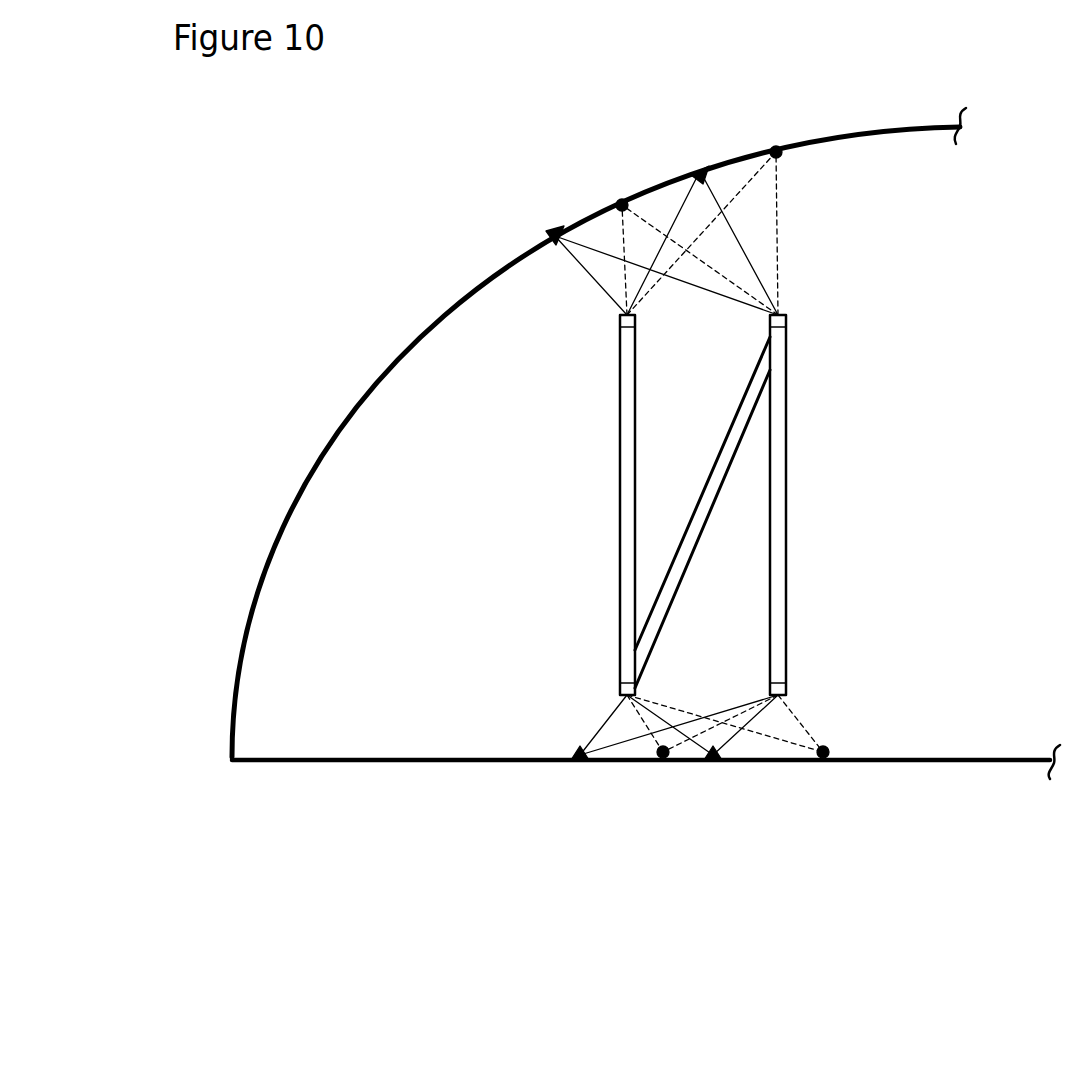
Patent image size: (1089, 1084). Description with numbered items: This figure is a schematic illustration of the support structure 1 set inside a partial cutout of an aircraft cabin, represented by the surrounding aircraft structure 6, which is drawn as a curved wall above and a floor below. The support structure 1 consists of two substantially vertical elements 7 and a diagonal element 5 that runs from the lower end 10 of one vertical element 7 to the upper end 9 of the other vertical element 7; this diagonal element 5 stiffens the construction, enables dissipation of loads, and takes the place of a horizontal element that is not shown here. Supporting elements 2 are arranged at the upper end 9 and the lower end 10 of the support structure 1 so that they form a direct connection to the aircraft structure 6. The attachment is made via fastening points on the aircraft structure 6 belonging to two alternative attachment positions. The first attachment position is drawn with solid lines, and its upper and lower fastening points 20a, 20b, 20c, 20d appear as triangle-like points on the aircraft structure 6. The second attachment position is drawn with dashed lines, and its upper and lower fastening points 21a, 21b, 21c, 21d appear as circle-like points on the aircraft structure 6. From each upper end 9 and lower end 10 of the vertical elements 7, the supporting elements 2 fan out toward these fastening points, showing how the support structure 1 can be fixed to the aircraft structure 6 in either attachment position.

The support structure 1 is at (815, 400).
The supporting elements 2 is at (567, 729).
The diagonal element 5 is at (665, 556).
The aircraft structure 6 is at (315, 362).
The vertical elements 7 is at (627, 418).
The upper end 9 is at (613, 315).
The lower end 10 is at (611, 691).
The upper fastening point of the first attachment position 20a is at (551, 234).
The upper fastening point of the first attachment position 20b is at (697, 164).
The lower fastening point of the first attachment position 20c is at (580, 758).
The lower fastening point of the first attachment position 20d is at (713, 758).
The upper fastening point of the second attachment position 21a is at (616, 201).
The upper fastening point of the second attachment position 21b is at (770, 147).
The lower fastening point of the second attachment position 21c is at (663, 756).
The lower fastening point of the second attachment position 21d is at (823, 758).